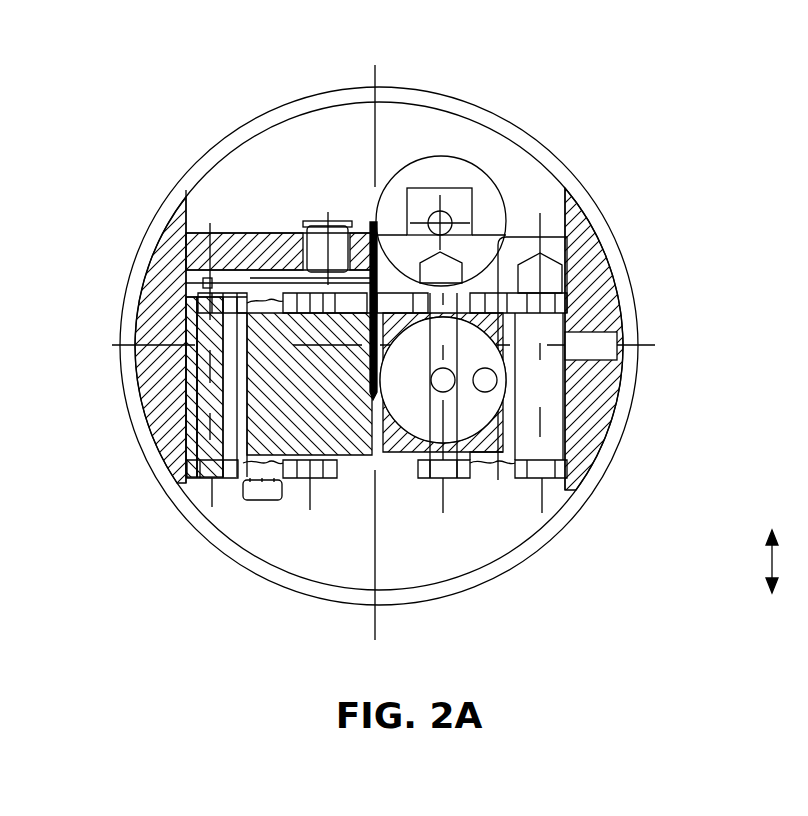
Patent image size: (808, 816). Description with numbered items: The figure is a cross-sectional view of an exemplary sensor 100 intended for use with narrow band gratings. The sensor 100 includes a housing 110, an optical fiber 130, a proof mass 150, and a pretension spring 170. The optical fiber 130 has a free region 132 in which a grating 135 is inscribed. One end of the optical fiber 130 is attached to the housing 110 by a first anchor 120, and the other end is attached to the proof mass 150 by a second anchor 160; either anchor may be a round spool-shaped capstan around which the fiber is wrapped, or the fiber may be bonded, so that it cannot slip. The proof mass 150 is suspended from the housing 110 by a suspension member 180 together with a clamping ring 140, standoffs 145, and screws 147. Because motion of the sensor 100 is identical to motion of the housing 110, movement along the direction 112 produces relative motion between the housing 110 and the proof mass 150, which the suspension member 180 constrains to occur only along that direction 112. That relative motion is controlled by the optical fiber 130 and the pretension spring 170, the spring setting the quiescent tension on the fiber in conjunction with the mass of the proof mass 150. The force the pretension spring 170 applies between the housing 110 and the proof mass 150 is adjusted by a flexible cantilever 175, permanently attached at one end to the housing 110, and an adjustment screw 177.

The sensor 100 is at (614, 538).
The housing 110 is at (513, 345).
The direction 112 is at (765, 553).
The first anchor 120 is at (487, 172).
The optical fiber 130 is at (362, 470).
The free region 132 is at (370, 222).
The grating 135 is at (368, 398).
The clamping ring 140 is at (575, 322).
The standoffs 145 is at (593, 285).
The screws 147 is at (557, 305).
The proof mass 150 is at (405, 472).
The second anchor 160 is at (470, 438).
The pretension spring 170 is at (307, 283).
The flexible cantilever 175 is at (235, 275).
The adjustment screw 177 is at (313, 225).
The suspension member 180 is at (505, 250).